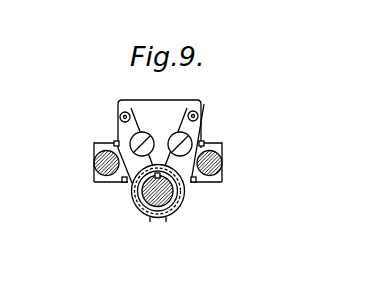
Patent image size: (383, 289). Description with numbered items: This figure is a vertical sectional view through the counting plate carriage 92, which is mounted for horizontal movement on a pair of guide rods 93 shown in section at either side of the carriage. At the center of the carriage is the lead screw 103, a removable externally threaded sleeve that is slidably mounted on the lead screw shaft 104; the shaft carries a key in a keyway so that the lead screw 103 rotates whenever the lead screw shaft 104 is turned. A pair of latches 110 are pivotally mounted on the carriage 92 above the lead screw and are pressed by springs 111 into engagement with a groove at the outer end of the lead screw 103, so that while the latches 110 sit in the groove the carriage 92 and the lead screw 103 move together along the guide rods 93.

The counting plate carriage 92 is at (194, 184).
The guide rods 93 is at (94, 166).
The lead screw 103 is at (160, 217).
The lead screw shaft 104 is at (166, 196).
The latches 110 is at (121, 123).
The springs 111 is at (94, 143).